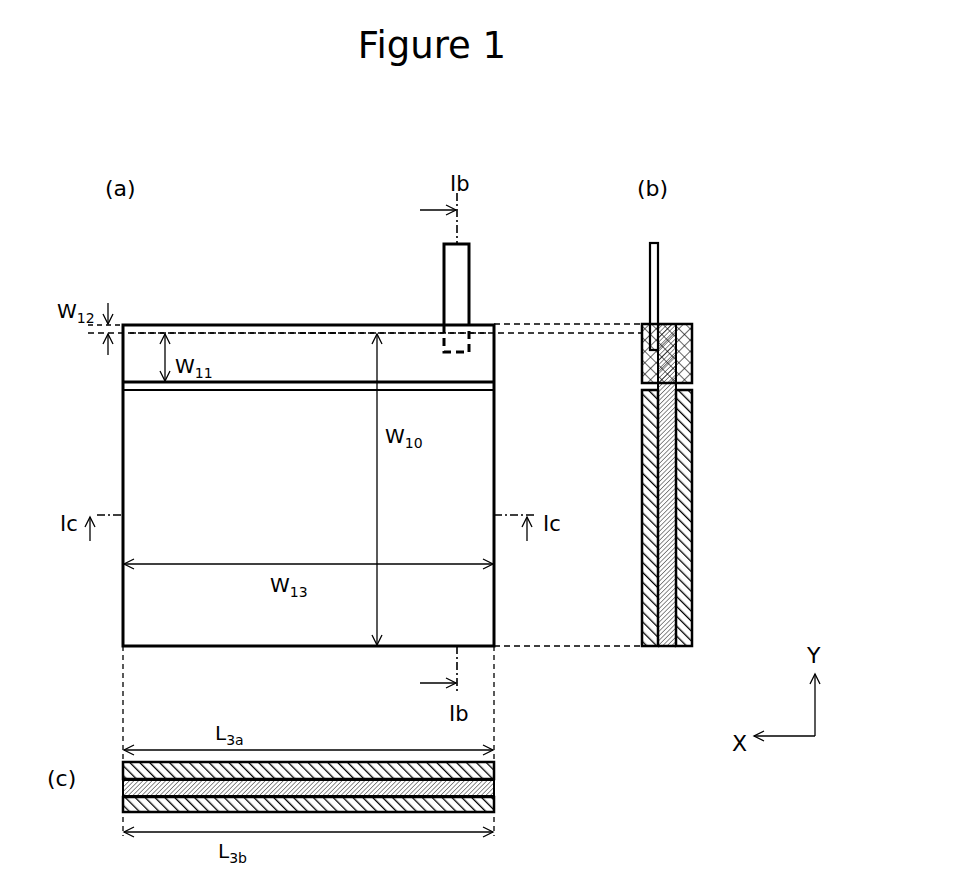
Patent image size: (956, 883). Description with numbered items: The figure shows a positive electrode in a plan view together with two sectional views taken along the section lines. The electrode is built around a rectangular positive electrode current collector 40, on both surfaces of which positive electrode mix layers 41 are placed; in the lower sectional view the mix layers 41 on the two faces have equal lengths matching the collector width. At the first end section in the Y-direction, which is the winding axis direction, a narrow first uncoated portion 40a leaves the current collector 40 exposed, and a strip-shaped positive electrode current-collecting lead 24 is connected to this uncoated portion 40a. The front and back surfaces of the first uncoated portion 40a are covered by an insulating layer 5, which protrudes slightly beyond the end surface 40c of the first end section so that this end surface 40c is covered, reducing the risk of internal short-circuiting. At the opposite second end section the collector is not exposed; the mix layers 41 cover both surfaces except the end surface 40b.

The insulating layer 5 is at (135, 365).
The positive electrode current-collecting lead 24 is at (457, 276).
The positive electrode current collector 40 is at (668, 450).
The first uncoated portion 40a is at (325, 352).
The end surface of the second end section 40b is at (667, 649).
The end surface of the first end section 40c is at (229, 330).
The positive electrode mix layers 41 is at (278, 627).